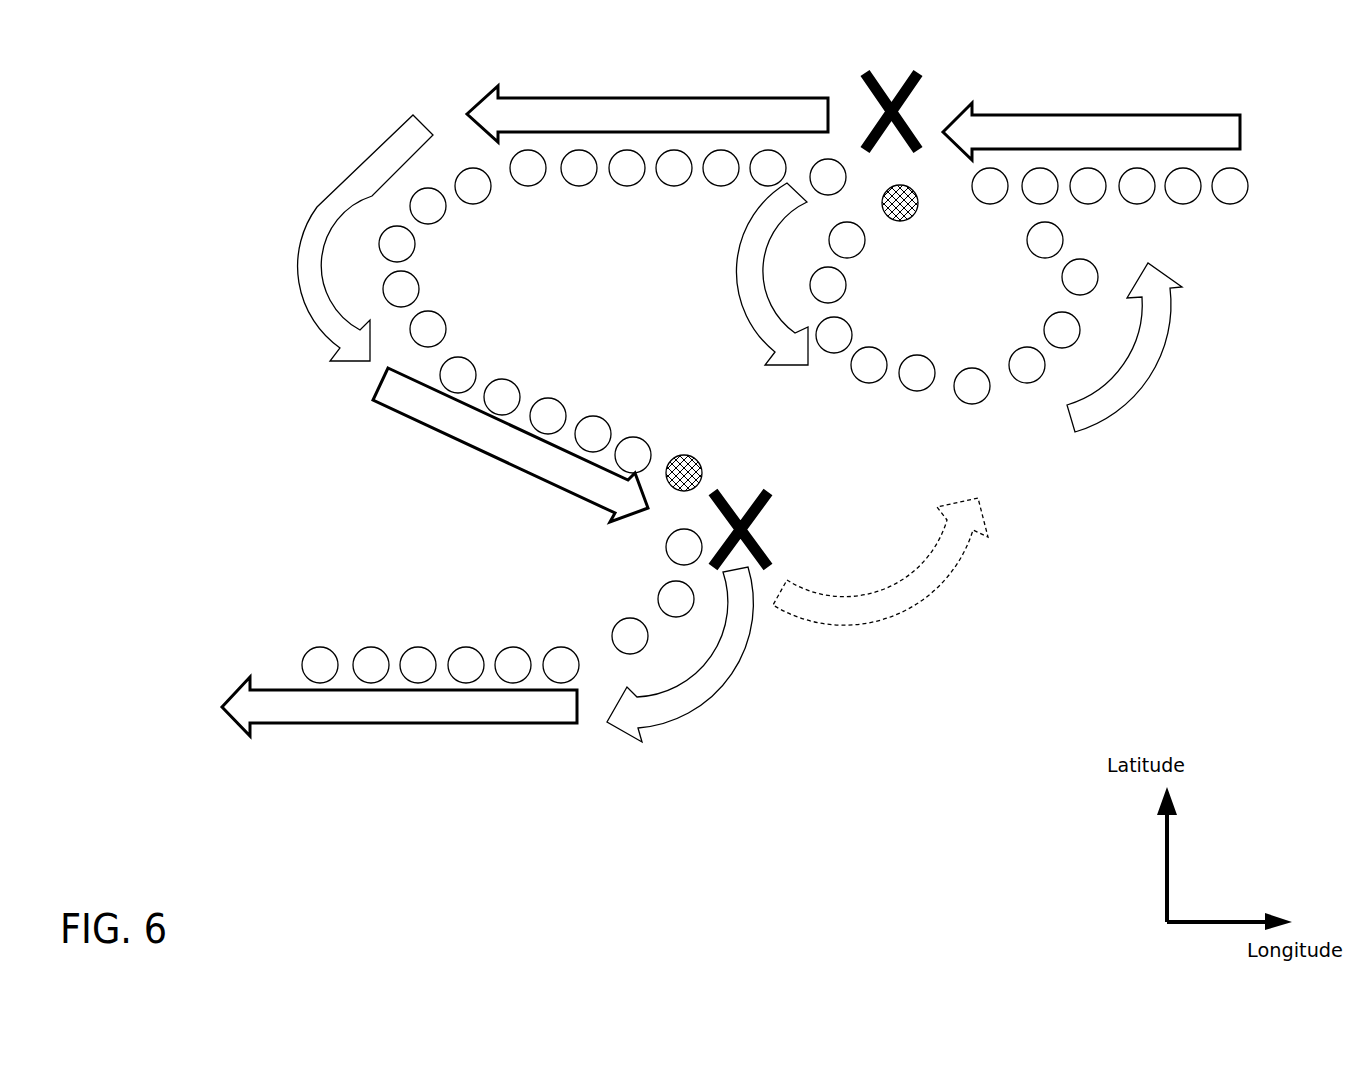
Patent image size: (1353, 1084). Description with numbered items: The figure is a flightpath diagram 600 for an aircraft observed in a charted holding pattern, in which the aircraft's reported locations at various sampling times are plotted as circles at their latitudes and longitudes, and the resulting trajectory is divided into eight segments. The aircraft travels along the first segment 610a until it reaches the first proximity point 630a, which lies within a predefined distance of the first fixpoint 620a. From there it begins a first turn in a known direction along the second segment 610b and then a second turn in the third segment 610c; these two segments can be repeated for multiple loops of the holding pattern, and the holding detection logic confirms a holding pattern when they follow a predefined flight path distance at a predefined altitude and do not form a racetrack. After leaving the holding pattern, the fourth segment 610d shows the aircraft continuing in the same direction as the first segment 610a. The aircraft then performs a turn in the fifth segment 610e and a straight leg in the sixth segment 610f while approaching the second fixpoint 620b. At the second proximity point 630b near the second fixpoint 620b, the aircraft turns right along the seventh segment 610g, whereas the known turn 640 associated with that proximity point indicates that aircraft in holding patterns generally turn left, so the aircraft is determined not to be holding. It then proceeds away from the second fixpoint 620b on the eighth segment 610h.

The flightpath diagram 600 is at (168, 90).
The first segment 610a is at (1170, 113).
The second segment 610b is at (748, 304).
The third segment 610c is at (1138, 398).
The fourth segment 610d is at (711, 97).
The fifth segment 610e is at (297, 290).
The sixth segment 610f is at (490, 456).
The seventh segment 610g is at (680, 713).
The eighth segment 610h is at (352, 723).
The first fixpoint 620a is at (905, 97).
The second fixpoint 620b is at (758, 508).
The first proximity point 630a is at (900, 221).
The second proximity point 630b is at (698, 461).
The known turn 640 is at (862, 622).